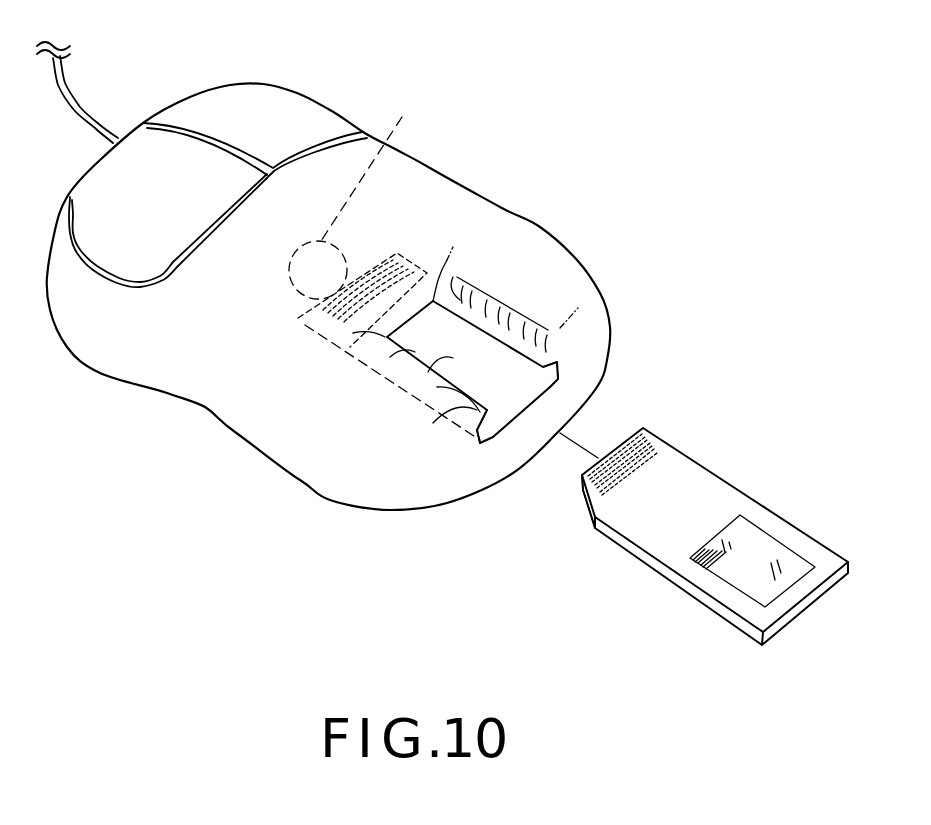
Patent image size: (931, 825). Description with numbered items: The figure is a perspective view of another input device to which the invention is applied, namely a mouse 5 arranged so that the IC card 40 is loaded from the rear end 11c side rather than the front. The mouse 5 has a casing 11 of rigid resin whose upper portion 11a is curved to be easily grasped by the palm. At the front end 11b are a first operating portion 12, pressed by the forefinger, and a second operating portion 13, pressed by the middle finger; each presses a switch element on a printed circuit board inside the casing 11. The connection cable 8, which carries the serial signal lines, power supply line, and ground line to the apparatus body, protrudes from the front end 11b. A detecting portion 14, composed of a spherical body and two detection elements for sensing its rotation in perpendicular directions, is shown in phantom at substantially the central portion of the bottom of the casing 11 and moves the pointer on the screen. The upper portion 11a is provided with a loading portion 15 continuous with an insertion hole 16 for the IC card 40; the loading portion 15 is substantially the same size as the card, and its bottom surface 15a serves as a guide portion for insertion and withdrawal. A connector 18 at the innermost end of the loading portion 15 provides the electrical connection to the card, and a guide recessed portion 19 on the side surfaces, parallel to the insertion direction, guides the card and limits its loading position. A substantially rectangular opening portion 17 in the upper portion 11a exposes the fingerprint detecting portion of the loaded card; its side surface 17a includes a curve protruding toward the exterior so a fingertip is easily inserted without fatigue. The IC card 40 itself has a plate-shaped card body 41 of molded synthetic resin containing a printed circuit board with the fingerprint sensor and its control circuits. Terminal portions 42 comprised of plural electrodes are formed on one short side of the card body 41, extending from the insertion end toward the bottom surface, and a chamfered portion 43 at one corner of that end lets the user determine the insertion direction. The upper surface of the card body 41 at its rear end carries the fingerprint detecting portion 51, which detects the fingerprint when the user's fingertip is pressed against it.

The mouse 5 is at (534, 119).
The connection cable 8 is at (80, 103).
The casing 11 is at (545, 234).
The upper portion 11a is at (498, 210).
The front end 11b is at (93, 163).
The rear end 11c is at (450, 470).
The first operating portion 12 is at (271, 98).
The second operating portion 13 is at (97, 210).
The detecting portion 14 is at (356, 193).
The loading portion 15 is at (437, 367).
The bottom surface 15a is at (400, 355).
The insertion hole 16 is at (558, 366).
The opening portion 17 is at (497, 313).
The side surface 17a is at (453, 297).
The connector 18 is at (403, 253).
The guide recessed portion 19 is at (557, 385).
The IC card 40 is at (683, 512).
The card body 41 is at (657, 568).
The terminal portions 42 is at (631, 426).
The chamfered portion 43 is at (581, 510).
The fingerprint detecting portion 51 is at (767, 548).